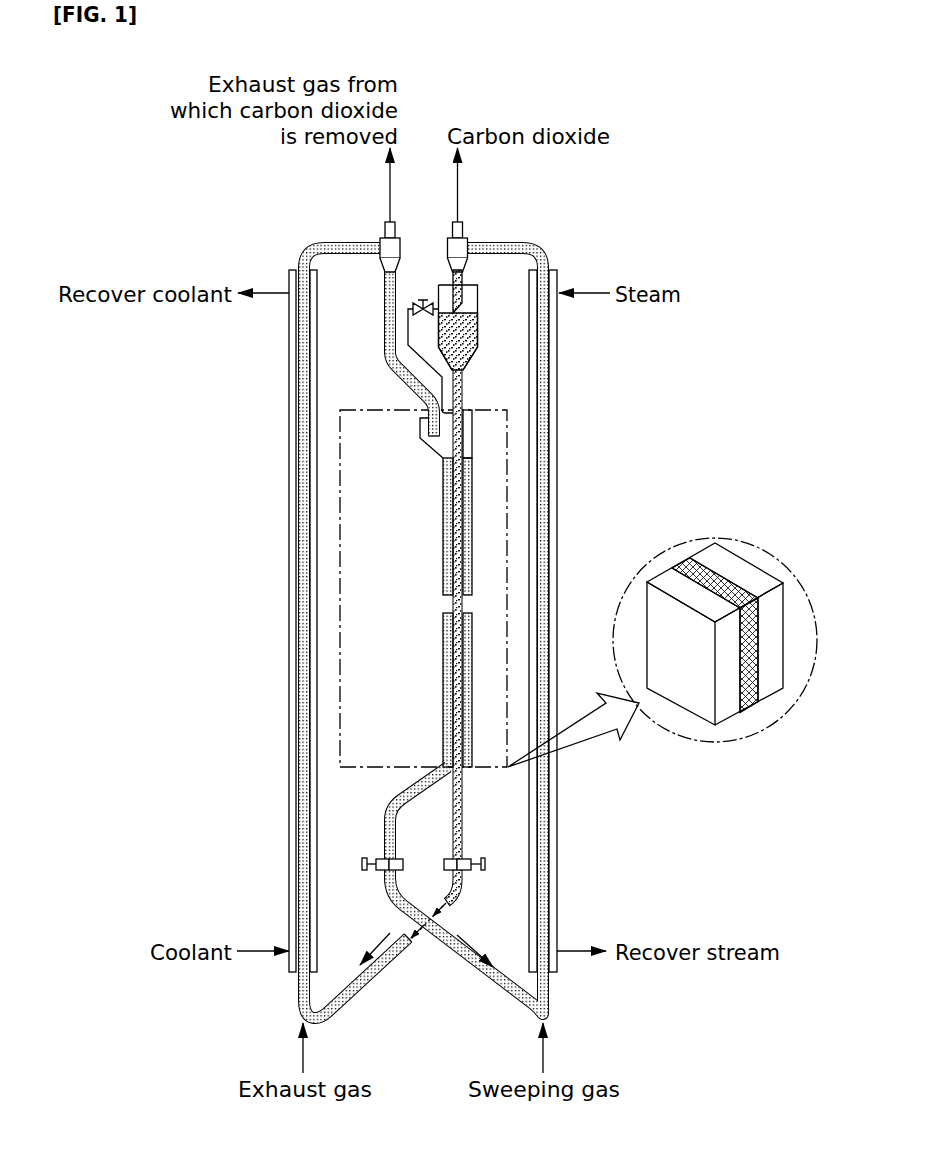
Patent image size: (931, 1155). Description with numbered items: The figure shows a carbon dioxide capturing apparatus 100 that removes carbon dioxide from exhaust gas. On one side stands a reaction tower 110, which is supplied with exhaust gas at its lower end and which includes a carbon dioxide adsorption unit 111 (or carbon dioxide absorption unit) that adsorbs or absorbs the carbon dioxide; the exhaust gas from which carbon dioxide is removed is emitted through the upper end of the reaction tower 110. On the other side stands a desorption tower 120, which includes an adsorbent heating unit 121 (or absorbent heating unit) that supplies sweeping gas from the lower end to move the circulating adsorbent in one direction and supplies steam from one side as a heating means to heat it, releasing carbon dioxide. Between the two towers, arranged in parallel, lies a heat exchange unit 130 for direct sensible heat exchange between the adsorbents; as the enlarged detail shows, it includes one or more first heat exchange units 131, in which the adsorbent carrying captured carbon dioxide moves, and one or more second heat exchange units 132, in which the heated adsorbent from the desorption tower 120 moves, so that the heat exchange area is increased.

The carbon dioxide capturing apparatus 100 is at (150, 70).
The reaction tower 110 is at (307, 253).
The carbon dioxide adsorption unit 111 is at (290, 440).
The desorption tower 120 is at (540, 249).
The adsorbent heating unit 121 is at (557, 440).
The heat exchange unit 130 is at (507, 487).
The first heat exchange unit 131 is at (658, 573).
The second heat exchange unit 132 is at (748, 708).